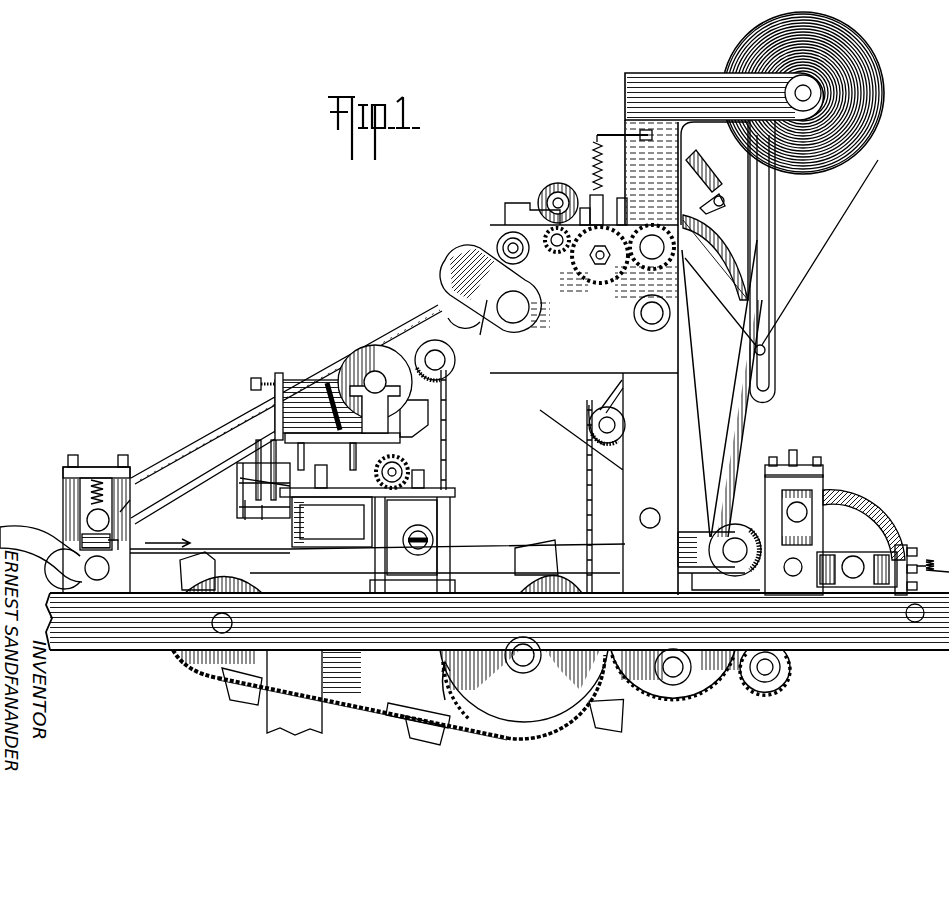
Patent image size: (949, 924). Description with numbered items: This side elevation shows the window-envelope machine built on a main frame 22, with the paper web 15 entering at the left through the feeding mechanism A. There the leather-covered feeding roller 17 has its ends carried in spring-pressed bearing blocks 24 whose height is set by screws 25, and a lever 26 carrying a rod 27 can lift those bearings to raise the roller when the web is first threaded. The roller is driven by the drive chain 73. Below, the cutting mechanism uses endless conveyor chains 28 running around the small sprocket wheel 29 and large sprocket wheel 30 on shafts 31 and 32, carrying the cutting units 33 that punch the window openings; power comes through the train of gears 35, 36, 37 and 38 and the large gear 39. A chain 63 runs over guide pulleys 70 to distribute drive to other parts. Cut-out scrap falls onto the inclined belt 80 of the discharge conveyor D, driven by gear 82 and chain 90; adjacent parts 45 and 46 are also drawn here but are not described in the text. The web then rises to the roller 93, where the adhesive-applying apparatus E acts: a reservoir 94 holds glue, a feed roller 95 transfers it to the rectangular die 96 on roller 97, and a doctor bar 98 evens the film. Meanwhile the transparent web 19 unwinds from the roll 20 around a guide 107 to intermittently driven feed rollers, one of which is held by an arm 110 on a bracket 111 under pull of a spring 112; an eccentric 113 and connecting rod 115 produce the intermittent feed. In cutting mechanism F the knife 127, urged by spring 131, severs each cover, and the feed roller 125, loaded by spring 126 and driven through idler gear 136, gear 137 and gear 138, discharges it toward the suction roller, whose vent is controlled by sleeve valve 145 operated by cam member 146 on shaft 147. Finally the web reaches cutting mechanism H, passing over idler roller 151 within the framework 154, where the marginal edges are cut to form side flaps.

The web of paper 15 is at (688, 375).
The feeding roller 17 is at (128, 497).
The web of transparent paper 19 is at (826, 240).
The roll 20 is at (738, 50).
The main frame 22 is at (116, 642).
The bearing blocks 24 is at (80, 505).
The screws 25 is at (86, 520).
The lever 26 is at (68, 560).
The rod 27 is at (140, 538).
The endless conveyor chains 28 is at (358, 710).
The small sprocket wheel 29 is at (218, 660).
The large sprocket wheel 30 is at (540, 722).
The shaft 31 is at (198, 662).
The shaft 32 is at (532, 648).
The cutting units 33 is at (433, 735).
The gear 35 is at (890, 590).
The gear 36 is at (828, 590).
The gear 37 is at (756, 590).
The gear 38 is at (780, 683).
The large gear 39 is at (700, 710).
The dial box 45 is at (435, 530).
The standard 46 is at (445, 500).
The chain 63 is at (585, 485).
The guide pulleys 70 is at (590, 420).
The drive chain 73 is at (158, 478).
The inclined belt 80 is at (332, 522).
The gear 82 is at (398, 462).
The chain 90 is at (240, 490).
The roller 93 is at (450, 300).
The reservoir 94 is at (275, 392).
The feed roller 95 is at (358, 358).
The die 96 is at (446, 400).
The roller 97 is at (448, 378).
The doctor bar 98 is at (330, 382).
The guide 107 is at (766, 352).
The arm 110 is at (716, 198).
The bracket 111 is at (692, 165).
The spring 112 is at (684, 245).
The eccentric 113 is at (880, 512).
The connecting rod 115 is at (745, 428).
The feed roller 125 is at (548, 190).
The spring 126 is at (515, 218).
The knife 127 is at (590, 185).
The spring 131 is at (598, 130).
The idler gear 136 is at (603, 285).
The gear 137 is at (652, 232).
The gear 138 is at (550, 255).
The sleeve valve 145 is at (496, 248).
The cam member 146 is at (487, 318).
The shaft 147 is at (530, 318).
The roller 151 is at (738, 524).
The framework 154 is at (820, 500).
The feeding mechanism A is at (96, 505).
The discharge conveyor D is at (263, 488).
The adhesive-applying apparatus E is at (361, 319).
The cutting mechanism F is at (572, 124).
The cutting mechanism H is at (810, 520).